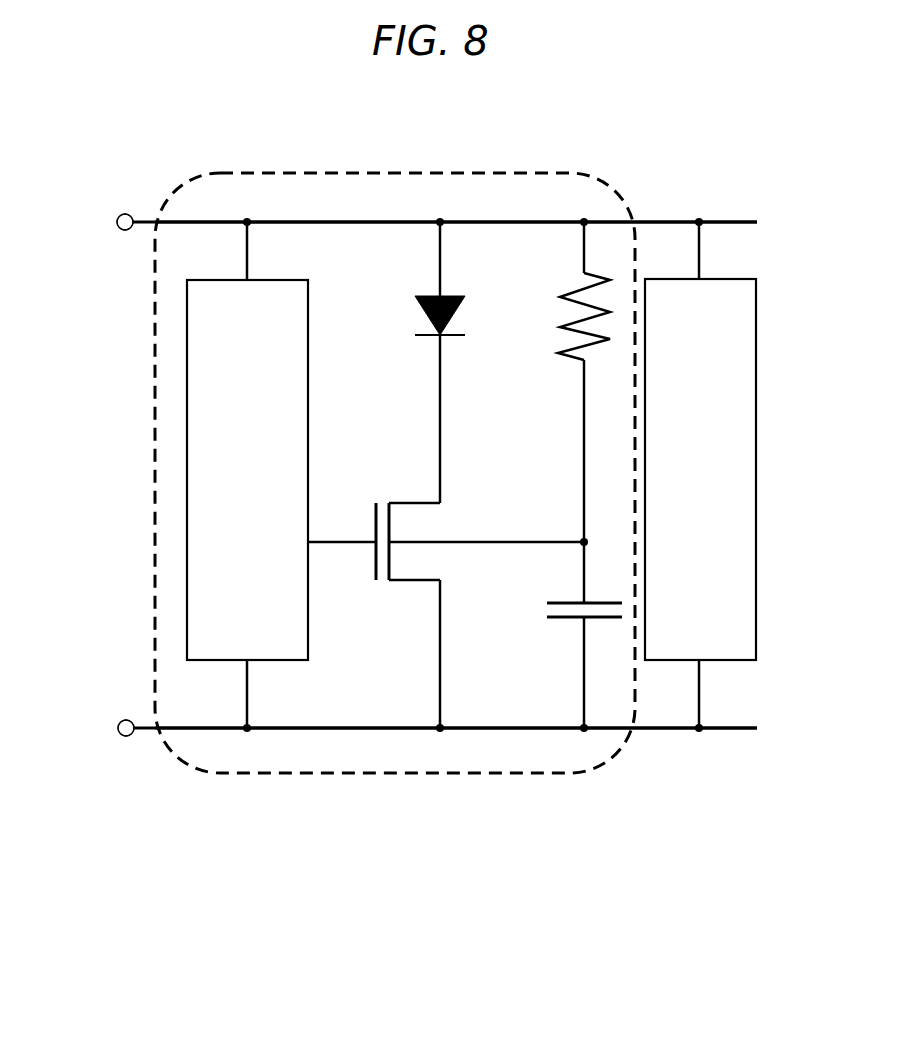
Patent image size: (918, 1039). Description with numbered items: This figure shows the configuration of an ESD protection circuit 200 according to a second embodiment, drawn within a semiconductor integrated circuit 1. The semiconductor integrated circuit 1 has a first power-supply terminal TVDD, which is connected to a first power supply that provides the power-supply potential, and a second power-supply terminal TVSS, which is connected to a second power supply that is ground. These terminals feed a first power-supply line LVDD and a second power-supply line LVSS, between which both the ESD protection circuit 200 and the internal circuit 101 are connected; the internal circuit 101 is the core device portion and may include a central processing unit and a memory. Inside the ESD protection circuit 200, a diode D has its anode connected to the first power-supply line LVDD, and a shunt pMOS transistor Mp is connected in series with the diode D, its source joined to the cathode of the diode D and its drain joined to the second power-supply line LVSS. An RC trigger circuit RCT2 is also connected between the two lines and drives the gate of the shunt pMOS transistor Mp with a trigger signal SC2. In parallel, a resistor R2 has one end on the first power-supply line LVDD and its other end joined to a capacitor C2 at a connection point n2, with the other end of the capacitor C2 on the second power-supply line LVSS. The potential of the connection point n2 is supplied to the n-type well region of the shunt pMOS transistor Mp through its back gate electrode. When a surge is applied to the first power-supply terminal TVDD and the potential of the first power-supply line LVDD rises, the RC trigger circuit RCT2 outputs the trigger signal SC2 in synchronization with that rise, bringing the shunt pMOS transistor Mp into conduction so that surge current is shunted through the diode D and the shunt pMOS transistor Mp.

The semiconductor integrated circuit 1 is at (669, 143).
The ESD protection circuit 200 is at (295, 170).
The internal circuit 101 is at (687, 662).
The RC trigger circuit RCT2 is at (308, 302).
The first power-supply terminal TVDD is at (135, 217).
The second power-supply terminal TVSS is at (128, 735).
The first power-supply line LVDD is at (482, 220).
The second power-supply line LVSS is at (496, 729).
The diode D is at (424, 362).
The shunt pMOS transistor Mp is at (387, 599).
The trigger signal SC2 is at (342, 571).
The resistor R2 is at (559, 382).
The connection point n2 is at (488, 524).
The capacitor C2 is at (567, 635).